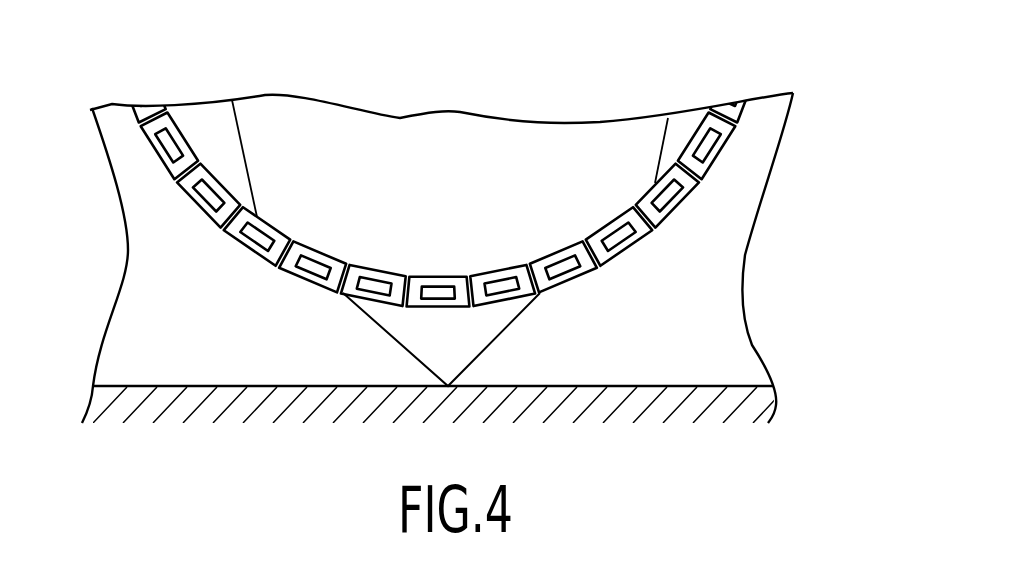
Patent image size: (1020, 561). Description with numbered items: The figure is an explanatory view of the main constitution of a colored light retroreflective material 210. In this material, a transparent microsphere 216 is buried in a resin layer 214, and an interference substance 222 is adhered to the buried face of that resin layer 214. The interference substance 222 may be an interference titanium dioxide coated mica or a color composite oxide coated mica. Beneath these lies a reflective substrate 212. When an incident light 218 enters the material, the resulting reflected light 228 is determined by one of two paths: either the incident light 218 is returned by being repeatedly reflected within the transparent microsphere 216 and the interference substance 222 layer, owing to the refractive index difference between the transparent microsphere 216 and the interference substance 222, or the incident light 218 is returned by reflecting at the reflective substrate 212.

The colored light retroreflective material 210 is at (716, 64).
The reflective substrate 212 is at (670, 466).
The resin layer 214 is at (746, 300).
The transparent microsphere 216 is at (512, 137).
The incident light 218 is at (244, 155).
The interference substance 222 is at (667, 215).
The reflected light 228 is at (663, 150).